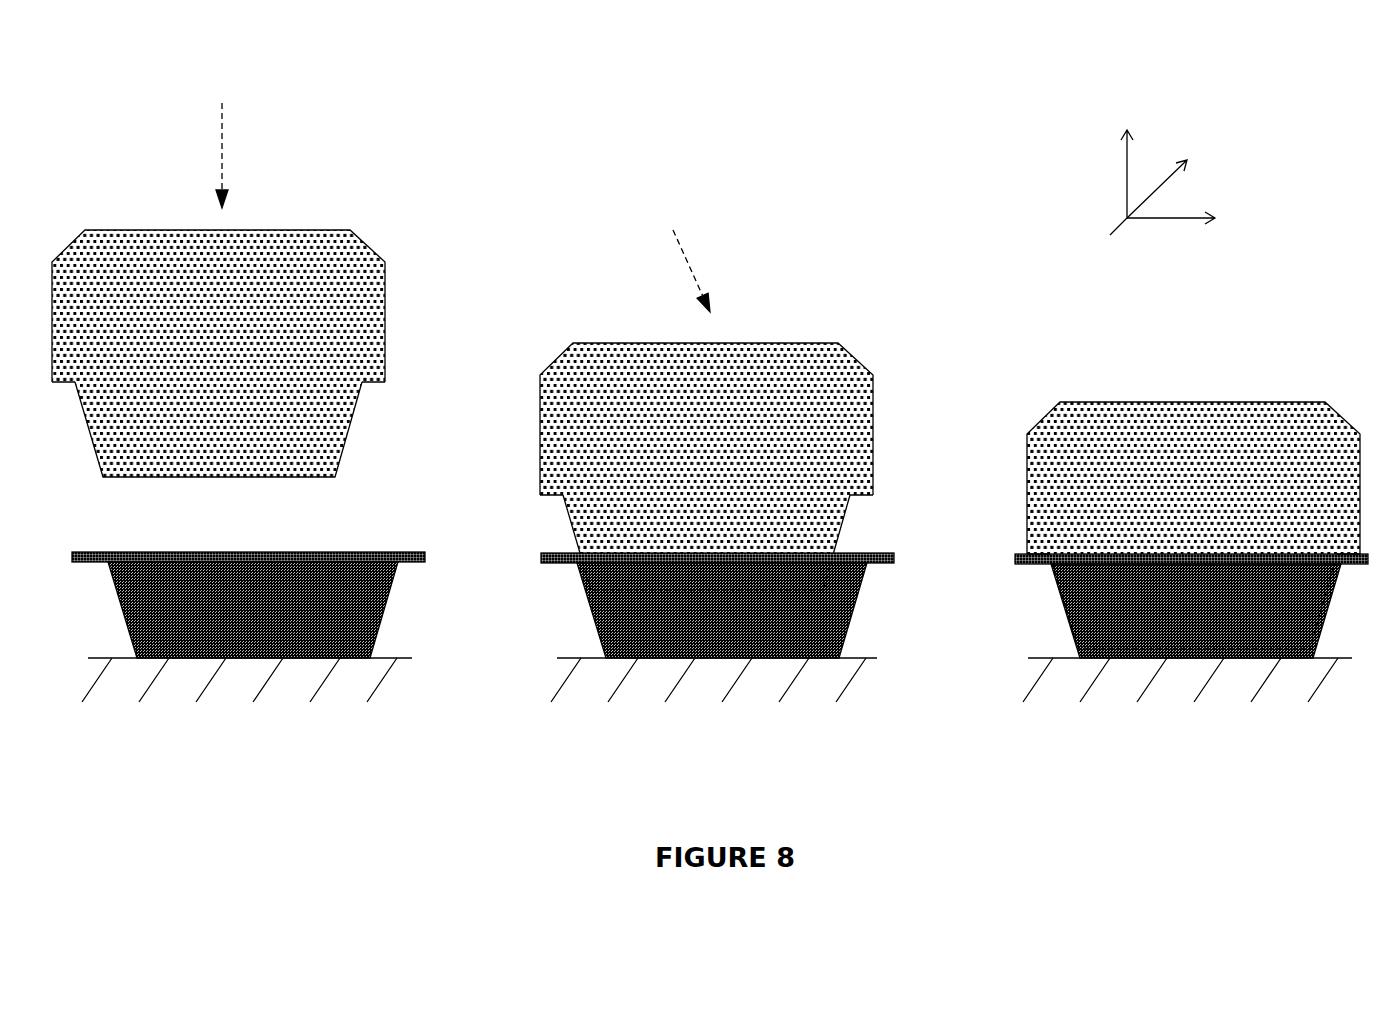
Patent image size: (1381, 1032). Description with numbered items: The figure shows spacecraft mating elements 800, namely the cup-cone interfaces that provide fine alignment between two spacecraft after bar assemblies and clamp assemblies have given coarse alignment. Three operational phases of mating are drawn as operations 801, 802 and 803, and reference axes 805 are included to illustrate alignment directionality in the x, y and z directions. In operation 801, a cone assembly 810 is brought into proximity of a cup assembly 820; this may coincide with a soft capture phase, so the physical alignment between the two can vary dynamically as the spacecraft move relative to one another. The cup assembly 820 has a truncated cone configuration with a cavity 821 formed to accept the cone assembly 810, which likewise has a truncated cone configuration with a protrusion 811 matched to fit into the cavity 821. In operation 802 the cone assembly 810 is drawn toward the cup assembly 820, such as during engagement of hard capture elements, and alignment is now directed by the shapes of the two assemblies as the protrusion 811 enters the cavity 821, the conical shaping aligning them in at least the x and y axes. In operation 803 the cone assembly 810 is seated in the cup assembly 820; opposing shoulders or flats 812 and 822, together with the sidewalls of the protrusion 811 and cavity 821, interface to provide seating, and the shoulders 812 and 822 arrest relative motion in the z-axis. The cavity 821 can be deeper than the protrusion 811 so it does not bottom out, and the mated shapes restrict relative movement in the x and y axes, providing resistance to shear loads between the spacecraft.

The spacecraft mating elements 800 is at (125, 102).
The operation 801 is at (148, 195).
The operation 802 is at (634, 318).
The operation 803 is at (1119, 383).
The reference axes 805 is at (1103, 181).
The cone assembly 810 is at (394, 263).
The protrusion 811 is at (343, 454).
The shoulders/flats of cone assembly 812 is at (373, 388).
The cup assembly 820 is at (1061, 602).
The cavity 821 is at (325, 592).
The shoulders/flats of cup assembly 822 is at (413, 567).